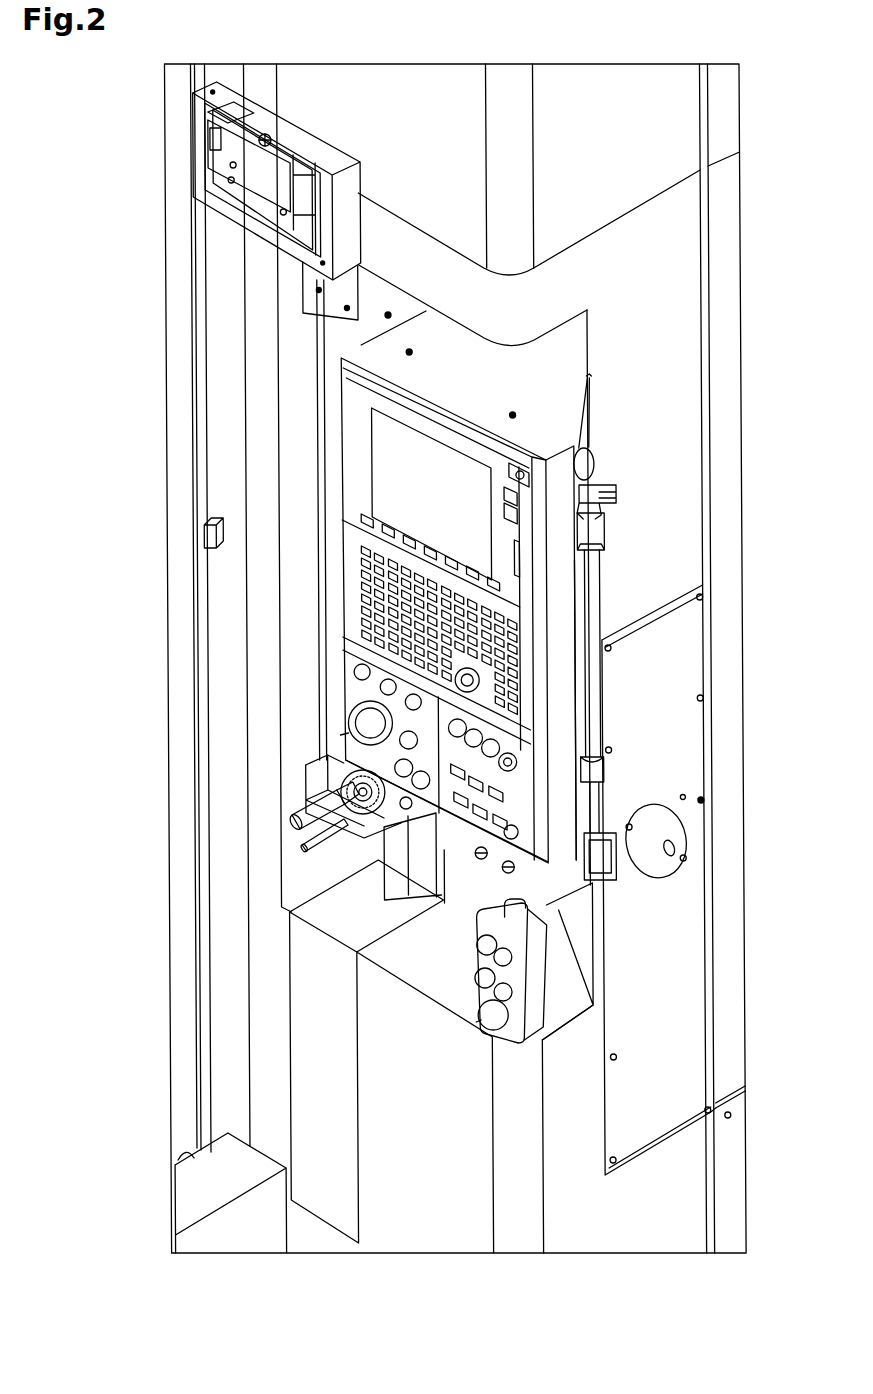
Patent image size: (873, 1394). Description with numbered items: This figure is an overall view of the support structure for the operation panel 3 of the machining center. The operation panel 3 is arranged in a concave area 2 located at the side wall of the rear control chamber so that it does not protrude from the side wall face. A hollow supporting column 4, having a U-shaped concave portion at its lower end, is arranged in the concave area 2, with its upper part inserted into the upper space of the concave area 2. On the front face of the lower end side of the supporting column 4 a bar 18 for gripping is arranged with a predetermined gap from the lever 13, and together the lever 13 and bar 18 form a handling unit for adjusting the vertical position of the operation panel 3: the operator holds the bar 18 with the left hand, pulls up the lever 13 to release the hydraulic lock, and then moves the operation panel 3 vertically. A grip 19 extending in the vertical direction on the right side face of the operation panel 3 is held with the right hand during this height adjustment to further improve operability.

The concave area 2 is at (567, 350).
The operation panel 3 is at (353, 447).
The supporting column 4 is at (372, 312).
The lever 13 is at (303, 847).
The bar 18 is at (307, 812).
The grip 19 is at (600, 725).